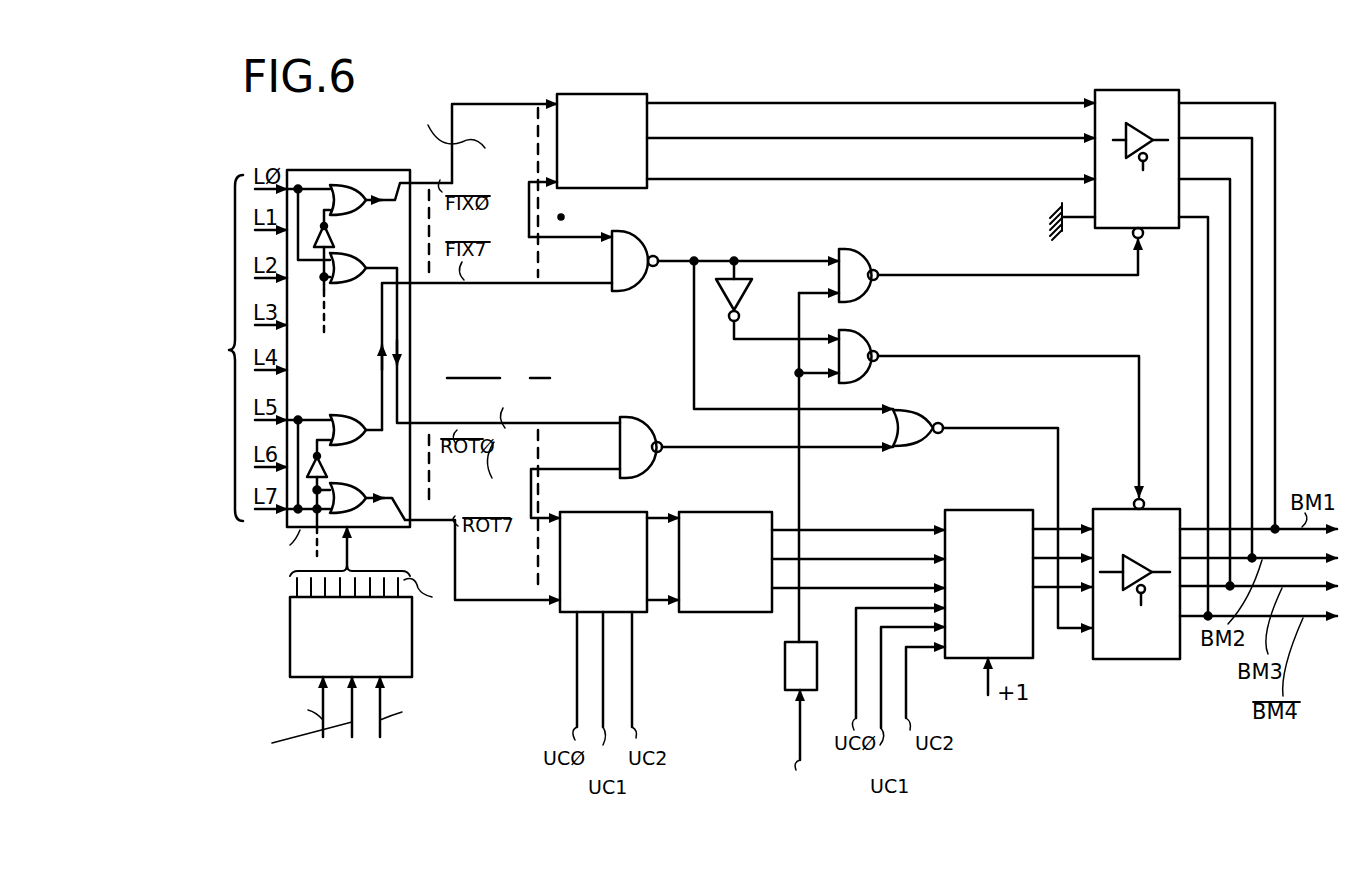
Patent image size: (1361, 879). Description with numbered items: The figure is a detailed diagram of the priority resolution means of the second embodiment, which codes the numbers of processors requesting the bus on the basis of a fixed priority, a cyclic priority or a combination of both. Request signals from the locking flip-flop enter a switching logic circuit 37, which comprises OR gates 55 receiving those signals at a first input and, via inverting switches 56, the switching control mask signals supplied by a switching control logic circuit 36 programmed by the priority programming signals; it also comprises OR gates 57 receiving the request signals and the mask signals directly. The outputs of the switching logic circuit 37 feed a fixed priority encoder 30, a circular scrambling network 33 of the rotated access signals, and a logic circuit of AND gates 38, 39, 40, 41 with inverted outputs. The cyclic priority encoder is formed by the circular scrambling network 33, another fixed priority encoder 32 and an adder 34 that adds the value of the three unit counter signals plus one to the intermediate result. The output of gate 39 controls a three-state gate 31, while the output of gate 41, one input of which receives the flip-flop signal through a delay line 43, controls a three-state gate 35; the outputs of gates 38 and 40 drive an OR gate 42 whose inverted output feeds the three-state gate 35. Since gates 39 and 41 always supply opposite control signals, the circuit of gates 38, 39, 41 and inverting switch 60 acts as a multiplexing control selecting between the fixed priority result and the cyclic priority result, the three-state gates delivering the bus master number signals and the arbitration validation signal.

The fixed priority encoder 30 is at (602, 141).
The three-state gate 31 is at (1125, 108).
The fixed priority encoder 32 is at (725, 562).
The circular scrambling network 33 is at (603, 562).
The adder 34 is at (989, 584).
The three-state gate 35 is at (1136, 660).
The switching control logic circuit 36 is at (337, 641).
The switching logic circuit 37 is at (344, 384).
The AND gate 38 is at (628, 244).
The AND gate 39 is at (860, 250).
The AND gate 40 is at (632, 420).
The AND gate 41 is at (864, 340).
The OR gate 42 is at (924, 414).
The delay line 43 is at (785, 670).
The OR gate 55 is at (358, 212).
The inverting switch 56 is at (337, 232).
The OR gate 57 is at (358, 266).
The inverting switch 60 is at (745, 298).